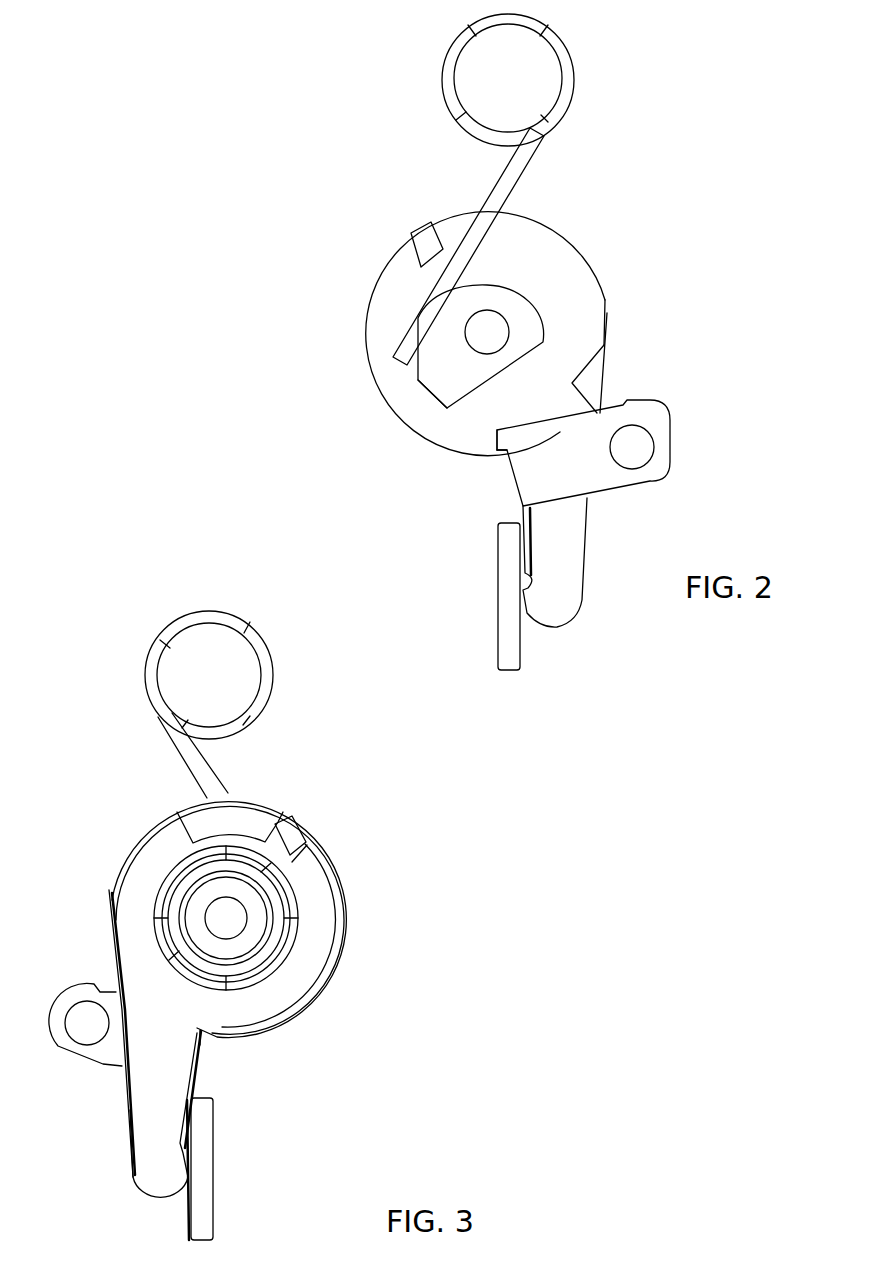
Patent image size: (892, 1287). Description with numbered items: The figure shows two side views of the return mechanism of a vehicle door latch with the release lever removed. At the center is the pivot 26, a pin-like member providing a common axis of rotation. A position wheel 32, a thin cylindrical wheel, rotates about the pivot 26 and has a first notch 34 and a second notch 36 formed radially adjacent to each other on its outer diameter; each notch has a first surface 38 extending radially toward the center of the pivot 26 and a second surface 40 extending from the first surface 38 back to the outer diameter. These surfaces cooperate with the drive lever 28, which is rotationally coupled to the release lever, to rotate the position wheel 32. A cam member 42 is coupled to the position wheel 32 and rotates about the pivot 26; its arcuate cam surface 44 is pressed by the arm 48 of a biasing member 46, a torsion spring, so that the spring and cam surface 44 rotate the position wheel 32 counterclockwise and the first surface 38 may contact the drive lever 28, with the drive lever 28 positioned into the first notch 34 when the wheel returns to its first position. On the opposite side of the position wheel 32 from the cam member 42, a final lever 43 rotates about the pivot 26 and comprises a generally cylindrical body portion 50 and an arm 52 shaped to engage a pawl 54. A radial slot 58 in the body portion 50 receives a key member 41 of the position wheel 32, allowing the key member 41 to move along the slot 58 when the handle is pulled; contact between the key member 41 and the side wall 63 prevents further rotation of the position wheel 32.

In FIG. 2, the pivot 26 is at (507, 322).
In FIG. 3, the pivot 26 is at (247, 927).
In FIG. 2, the drive lever 28 is at (650, 481).
In FIG. 3, the drive lever 28 is at (103, 1065).
In FIG. 2, the position wheel 32 is at (560, 231).
In FIG. 3, the position wheel 32 is at (143, 832).
In FIG. 2, the first notch 34 is at (501, 462).
In FIG. 2, the second notch 36 is at (591, 368).
In FIG. 2, the first surface 38 is at (500, 450).
In FIG. 2, the second surface 40 is at (550, 424).
In FIG. 2, the key member 41 is at (418, 246).
In FIG. 3, the key member 41 is at (290, 835).
In FIG. 2, the cam member 42 is at (497, 290).
In FIG. 2, the final lever 43 is at (588, 535).
In FIG. 3, the final lever 43 is at (118, 927).
In FIG. 2, the cam surface 44 is at (428, 390).
In FIG. 2, the biasing member 46 is at (570, 62).
In FIG. 3, the biasing member 46 is at (155, 650).
In FIG. 2, the arm 48 is at (492, 190).
In FIG. 3, the cylindrical body portion 50 is at (318, 935).
In FIG. 3, the arm 52 is at (130, 1110).
In FIG. 2, the pawl 54 is at (500, 638).
In FIG. 3, the pawl 54 is at (213, 1190).
In FIG. 3, the radial slot 58 is at (245, 816).
In FIG. 3, the side wall 63 is at (302, 858).